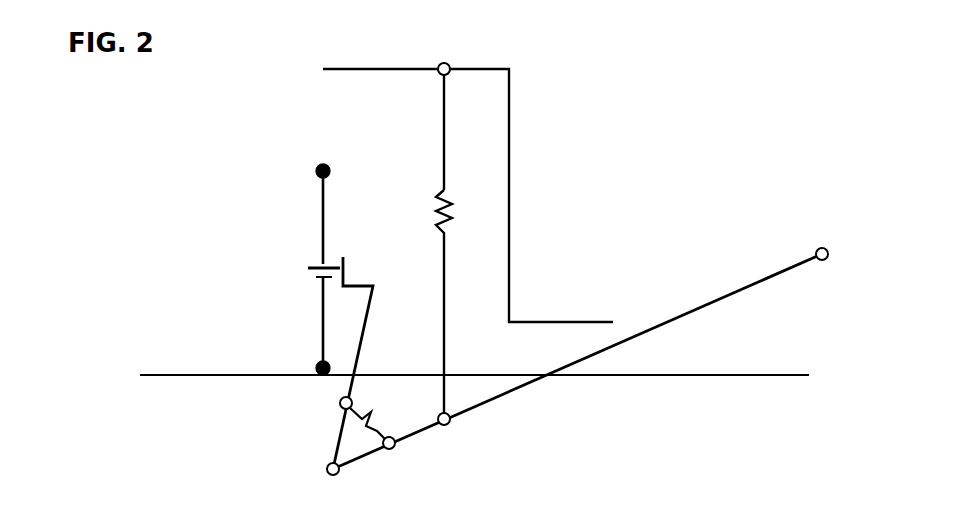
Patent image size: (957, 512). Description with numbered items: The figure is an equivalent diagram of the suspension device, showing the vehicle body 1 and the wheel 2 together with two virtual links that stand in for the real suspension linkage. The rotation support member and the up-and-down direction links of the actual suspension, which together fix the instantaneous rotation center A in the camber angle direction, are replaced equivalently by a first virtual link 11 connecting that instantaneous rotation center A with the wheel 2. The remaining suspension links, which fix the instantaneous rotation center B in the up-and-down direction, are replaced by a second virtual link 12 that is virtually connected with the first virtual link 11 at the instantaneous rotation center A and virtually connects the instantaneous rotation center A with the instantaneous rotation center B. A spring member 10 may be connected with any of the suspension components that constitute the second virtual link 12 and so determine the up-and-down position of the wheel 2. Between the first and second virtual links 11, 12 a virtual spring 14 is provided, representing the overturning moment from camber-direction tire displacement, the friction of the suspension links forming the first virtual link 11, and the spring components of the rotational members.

The vehicle body 1 is at (484, 68).
The spring member 10 is at (456, 210).
The first virtual link 11 is at (367, 314).
The wheel 2 is at (323, 317).
The second virtual link 12 is at (493, 400).
The virtual spring 14 is at (366, 426).
The instantaneous rotation center in the camber angle direction A is at (330, 474).
The instantaneous rotation center in the up-and-down direction B is at (821, 248).